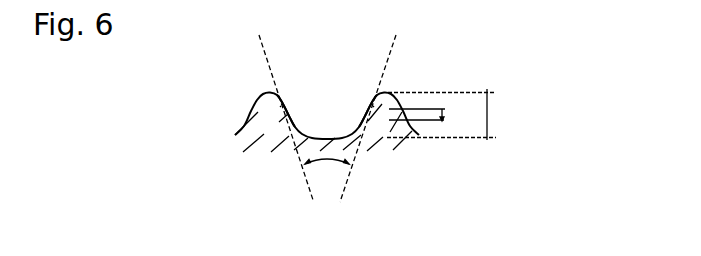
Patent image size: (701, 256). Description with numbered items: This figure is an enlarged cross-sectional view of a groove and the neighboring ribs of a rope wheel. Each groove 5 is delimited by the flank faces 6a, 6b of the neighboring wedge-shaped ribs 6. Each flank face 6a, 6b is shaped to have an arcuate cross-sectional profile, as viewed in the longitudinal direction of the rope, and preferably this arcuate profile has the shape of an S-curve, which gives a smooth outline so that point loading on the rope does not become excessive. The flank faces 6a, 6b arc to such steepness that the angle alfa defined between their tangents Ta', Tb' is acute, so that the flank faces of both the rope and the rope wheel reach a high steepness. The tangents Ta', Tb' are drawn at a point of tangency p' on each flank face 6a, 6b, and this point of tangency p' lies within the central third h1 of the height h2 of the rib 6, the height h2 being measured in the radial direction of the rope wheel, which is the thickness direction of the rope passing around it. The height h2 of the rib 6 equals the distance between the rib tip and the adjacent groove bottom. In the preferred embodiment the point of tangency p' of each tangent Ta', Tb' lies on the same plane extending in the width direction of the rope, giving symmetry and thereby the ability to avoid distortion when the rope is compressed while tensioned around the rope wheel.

The groove 5 is at (334, 123).
The wedge-shaped rib 6 is at (276, 130).
The flank face 6a is at (284, 102).
The flank face 6b is at (372, 102).
The point of tangency p' is at (327, 78).
The tangent Ta' is at (286, 134).
The tangent Tb' is at (368, 134).
The central third of the height h1 is at (428, 116).
The height of the rib h2 is at (444, 114).